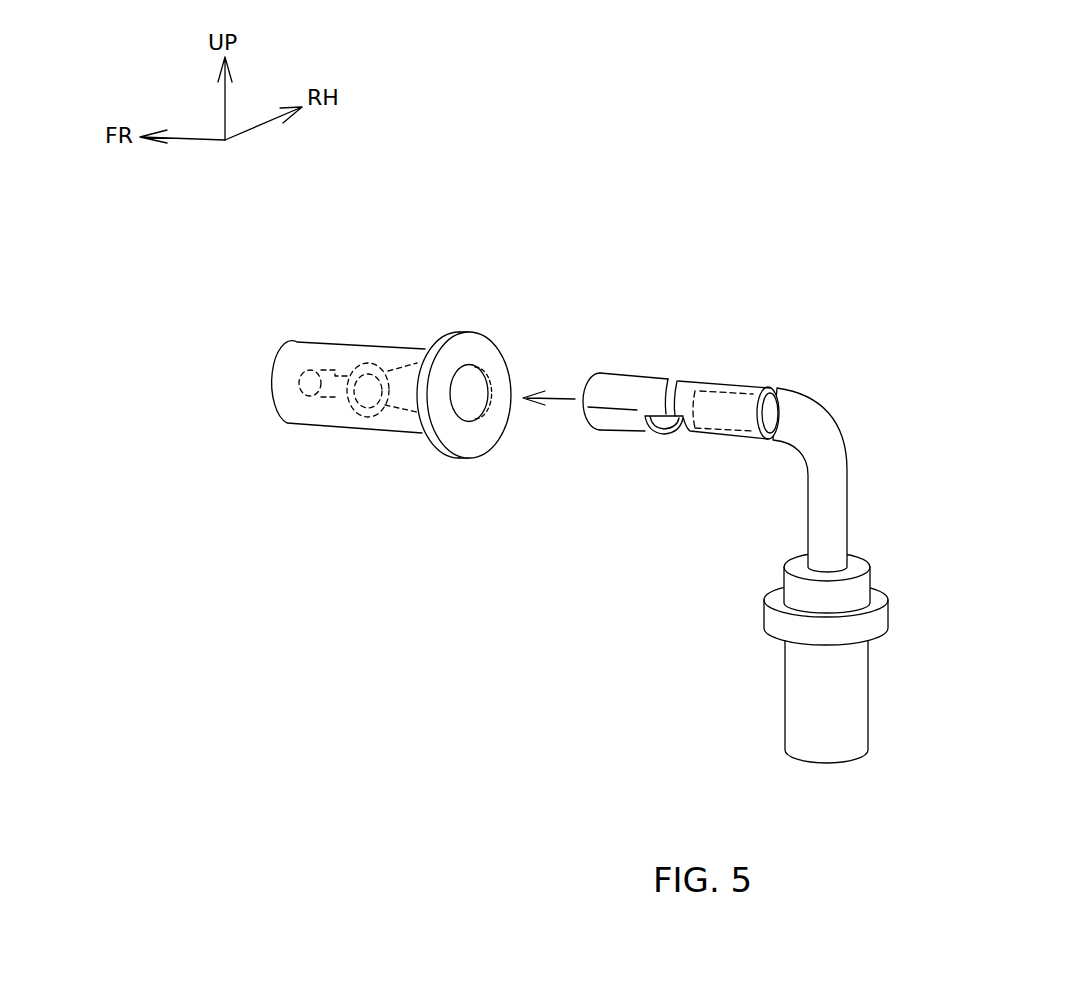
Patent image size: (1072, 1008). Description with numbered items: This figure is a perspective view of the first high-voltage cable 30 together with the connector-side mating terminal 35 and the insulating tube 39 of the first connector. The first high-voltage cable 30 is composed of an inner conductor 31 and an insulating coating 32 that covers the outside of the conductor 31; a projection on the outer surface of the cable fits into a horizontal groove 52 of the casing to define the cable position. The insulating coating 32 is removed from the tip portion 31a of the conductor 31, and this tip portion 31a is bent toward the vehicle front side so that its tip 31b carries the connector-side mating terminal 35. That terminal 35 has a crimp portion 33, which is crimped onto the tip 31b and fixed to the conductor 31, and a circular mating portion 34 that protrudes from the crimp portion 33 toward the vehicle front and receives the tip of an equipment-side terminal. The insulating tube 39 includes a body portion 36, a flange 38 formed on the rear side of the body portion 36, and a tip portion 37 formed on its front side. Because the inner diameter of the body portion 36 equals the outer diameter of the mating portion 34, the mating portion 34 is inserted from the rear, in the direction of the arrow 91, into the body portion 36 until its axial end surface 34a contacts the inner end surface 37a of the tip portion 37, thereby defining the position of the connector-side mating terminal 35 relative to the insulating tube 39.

The first high-voltage cable 30 is at (877, 780).
The conductor 31 is at (866, 490).
The tip portion 31a is at (815, 403).
The tip 31b is at (730, 430).
The insulating coating 32 is at (852, 680).
The crimp portion 33 is at (740, 383).
The mating portion 34 is at (650, 373).
The axial end surface 34a is at (583, 423).
The connector-side mating terminal 35 is at (887, 190).
The body portion 36 is at (412, 353).
The tip portion 37 is at (325, 368).
The inner end surface 37a is at (368, 430).
The flange 38 is at (487, 332).
The insulating tube 39 is at (553, 198).
The horizontal groove 52 is at (892, 613).
The arrow 91 is at (563, 392).